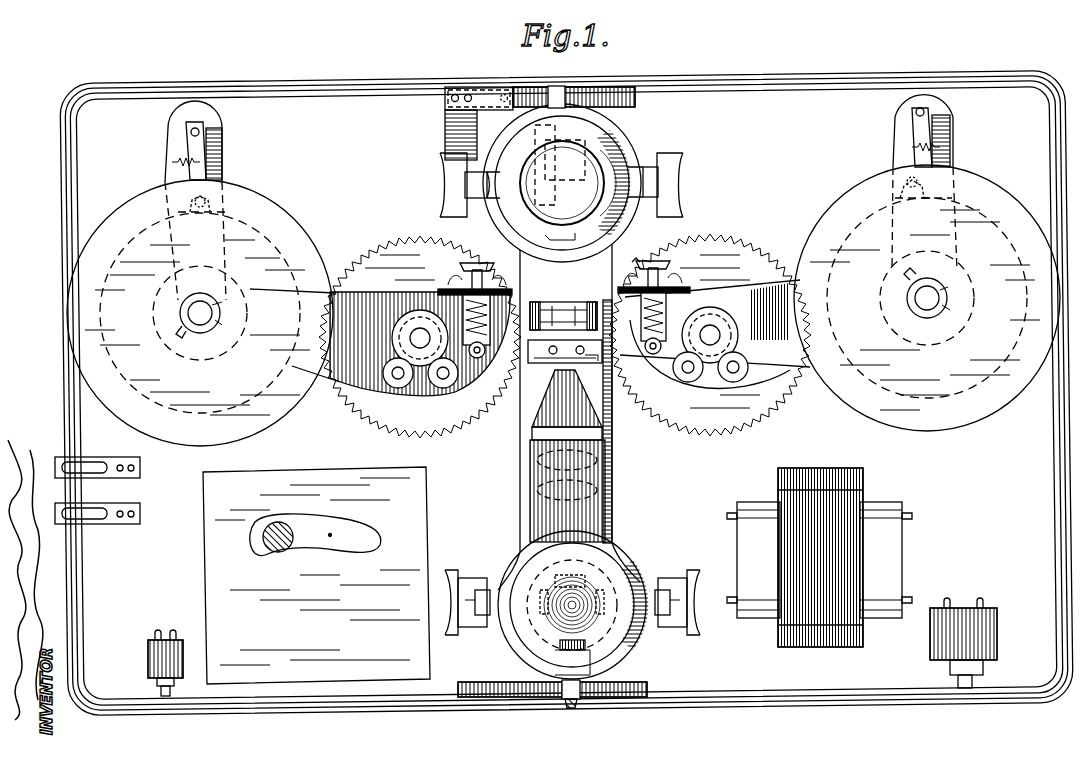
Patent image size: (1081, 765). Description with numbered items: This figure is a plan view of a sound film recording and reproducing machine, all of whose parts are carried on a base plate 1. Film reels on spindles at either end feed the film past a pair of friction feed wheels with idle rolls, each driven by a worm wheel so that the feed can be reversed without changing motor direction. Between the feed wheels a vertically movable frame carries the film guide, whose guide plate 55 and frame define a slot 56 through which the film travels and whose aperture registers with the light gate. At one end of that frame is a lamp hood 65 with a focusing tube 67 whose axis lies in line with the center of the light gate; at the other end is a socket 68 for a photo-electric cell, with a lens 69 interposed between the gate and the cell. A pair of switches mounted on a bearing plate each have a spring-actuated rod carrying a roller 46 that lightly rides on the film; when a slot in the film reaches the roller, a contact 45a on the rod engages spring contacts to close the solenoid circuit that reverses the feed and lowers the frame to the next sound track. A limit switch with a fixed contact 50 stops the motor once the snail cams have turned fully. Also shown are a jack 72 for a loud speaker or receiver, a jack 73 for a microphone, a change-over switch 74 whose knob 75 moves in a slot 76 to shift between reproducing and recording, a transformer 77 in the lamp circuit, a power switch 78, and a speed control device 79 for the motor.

The base plate 1 is at (882, 84).
The contact 45a is at (652, 262).
The roller 46 is at (680, 352).
The fixed contact 50 is at (492, 88).
The guide plate 55 is at (540, 362).
The slot 56 is at (592, 362).
The lamp hood 65 is at (620, 568).
The focusing tube 67 is at (600, 512).
The socket 68 is at (606, 150).
The lens 69 is at (560, 308).
The jack 72 is at (94, 458).
The jack 73 is at (96, 525).
The change-over switch 74 is at (316, 575).
The knob 75 is at (278, 552).
The slot 76 is at (360, 526).
The transformer 77 is at (896, 555).
The power switch 78 is at (148, 654).
The speed control device 79 is at (997, 634).